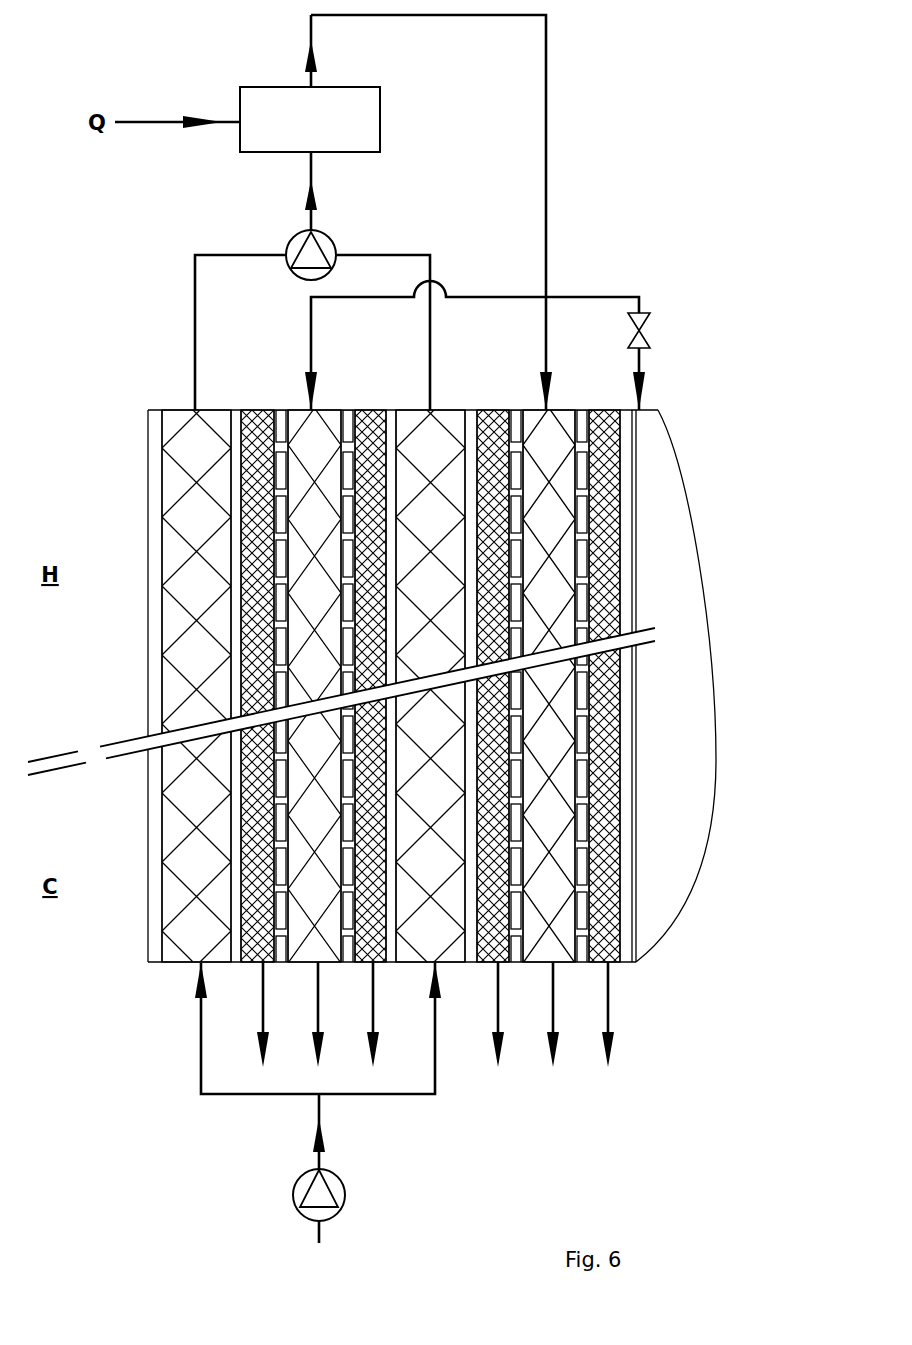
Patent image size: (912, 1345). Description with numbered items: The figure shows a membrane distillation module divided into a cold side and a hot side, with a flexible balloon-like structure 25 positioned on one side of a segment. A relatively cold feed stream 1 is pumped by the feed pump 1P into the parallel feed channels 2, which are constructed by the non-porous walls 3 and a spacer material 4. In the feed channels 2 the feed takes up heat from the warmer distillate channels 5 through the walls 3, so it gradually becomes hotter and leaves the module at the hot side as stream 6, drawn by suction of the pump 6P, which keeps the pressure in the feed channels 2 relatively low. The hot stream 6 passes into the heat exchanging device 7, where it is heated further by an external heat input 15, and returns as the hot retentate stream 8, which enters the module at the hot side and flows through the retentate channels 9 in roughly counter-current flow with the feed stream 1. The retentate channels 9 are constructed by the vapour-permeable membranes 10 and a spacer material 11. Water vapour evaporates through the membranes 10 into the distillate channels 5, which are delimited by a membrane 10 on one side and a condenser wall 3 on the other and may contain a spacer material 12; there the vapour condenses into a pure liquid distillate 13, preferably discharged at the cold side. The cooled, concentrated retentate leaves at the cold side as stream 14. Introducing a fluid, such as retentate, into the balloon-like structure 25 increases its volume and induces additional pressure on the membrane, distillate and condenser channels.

The feed stream 1 is at (322, 1158).
The feed pump 1P is at (302, 1177).
The feed channels 2 is at (313, 686).
The non-porous walls 3 is at (630, 993).
The spacer material 4 is at (452, 993).
The distillate channels 5 is at (430, 686).
The feed stream at hot side 6 is at (445, 333).
The pump 6P is at (292, 237).
The heat exchanging device 7 is at (310, 119).
The retentate stream 8 is at (562, 333).
The retentate channels 9 is at (431, 686).
The vapour-permeable membranes 10 is at (581, 410).
The spacer material 11 is at (723, 492).
The spacer material 12 is at (752, 790).
The liquid distillate 13 is at (608, 1023).
The retentate stream 14 is at (553, 1023).
The external heat input 15 is at (160, 120).
The balloon-like structure 25 is at (676, 686).